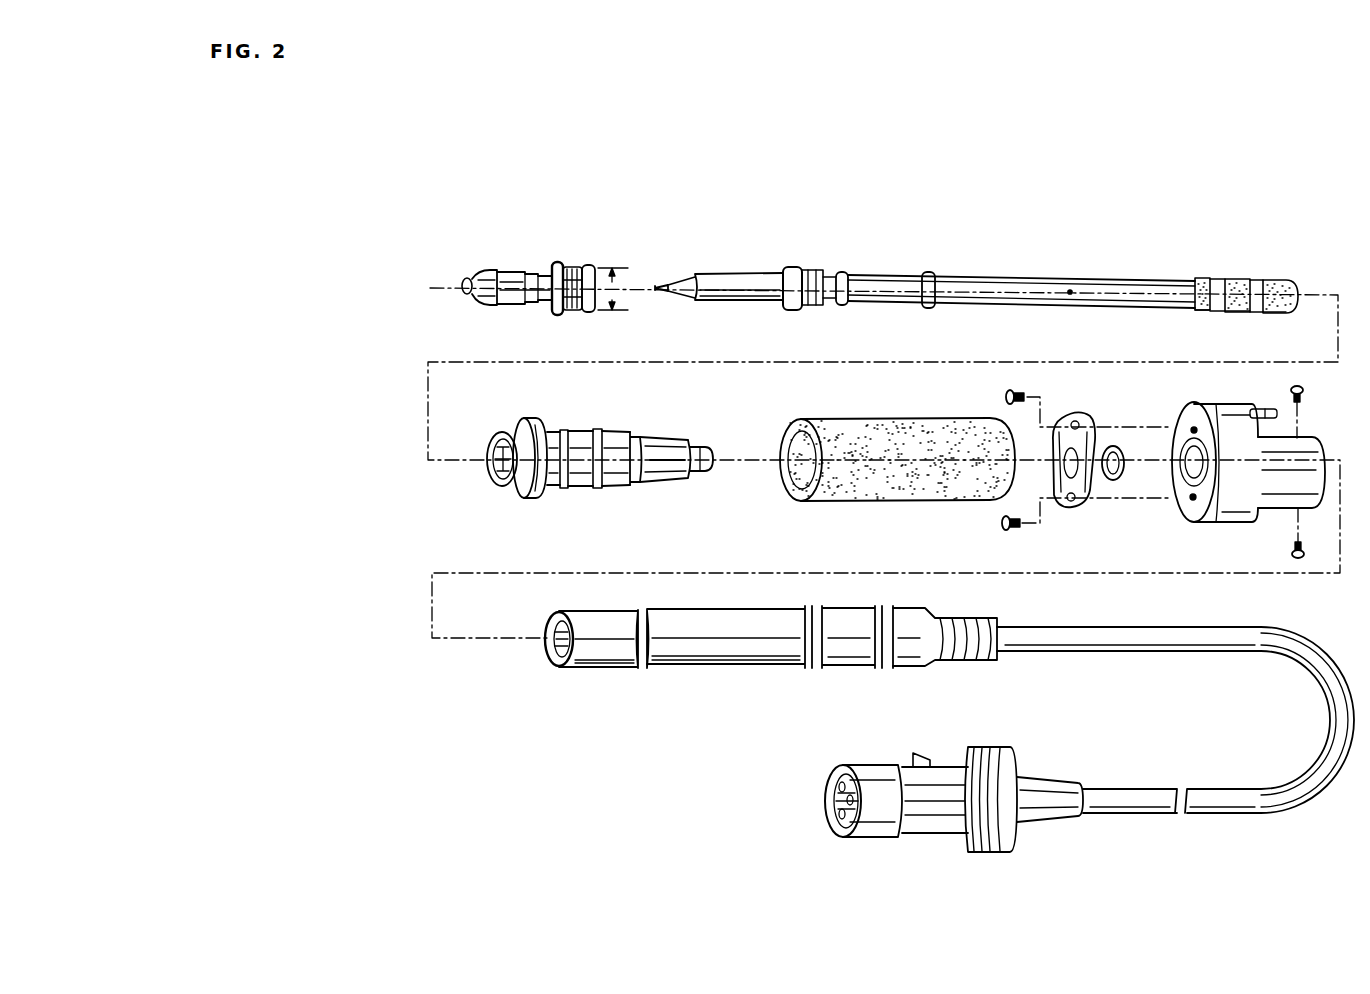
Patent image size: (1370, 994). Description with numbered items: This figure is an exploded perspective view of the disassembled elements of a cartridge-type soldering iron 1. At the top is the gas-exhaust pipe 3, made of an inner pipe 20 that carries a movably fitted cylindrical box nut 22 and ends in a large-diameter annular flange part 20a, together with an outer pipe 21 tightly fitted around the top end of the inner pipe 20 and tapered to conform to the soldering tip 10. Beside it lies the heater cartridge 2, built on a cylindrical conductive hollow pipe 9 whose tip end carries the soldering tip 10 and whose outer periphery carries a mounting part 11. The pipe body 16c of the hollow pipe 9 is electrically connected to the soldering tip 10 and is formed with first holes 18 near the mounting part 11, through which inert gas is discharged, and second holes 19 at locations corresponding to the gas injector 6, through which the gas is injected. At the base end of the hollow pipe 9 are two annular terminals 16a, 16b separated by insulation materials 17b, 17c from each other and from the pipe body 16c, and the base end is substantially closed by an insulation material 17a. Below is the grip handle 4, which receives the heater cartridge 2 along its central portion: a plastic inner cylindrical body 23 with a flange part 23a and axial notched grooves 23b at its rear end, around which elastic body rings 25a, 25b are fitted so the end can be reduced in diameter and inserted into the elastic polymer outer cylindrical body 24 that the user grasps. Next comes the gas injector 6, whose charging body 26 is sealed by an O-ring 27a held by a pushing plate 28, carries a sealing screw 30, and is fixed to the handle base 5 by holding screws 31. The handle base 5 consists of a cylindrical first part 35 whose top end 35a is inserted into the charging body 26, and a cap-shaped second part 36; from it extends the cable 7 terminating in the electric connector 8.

The cartridge-type soldering iron 1 is at (600, 783).
The heater cartridge 2 is at (1046, 217).
The gas-exhaust pipe 3 is at (539, 195).
The grip handle 4 is at (885, 521).
The handle base 5 is at (713, 719).
The gas injector 6 is at (1232, 568).
The cable 7 is at (1317, 784).
The electric connector 8 is at (913, 903).
The hollow pipe 9 is at (972, 278).
The soldering tip 10 is at (661, 281).
The mounting part 11 is at (808, 267).
The annular terminal 16a is at (1253, 289).
The annular terminal 16b is at (1213, 290).
The pipe body 16c is at (1146, 289).
The insulation material 17a is at (1284, 314).
The insulation material 17b is at (1239, 313).
The insulation material 17c is at (1200, 311).
The first holes 18 is at (781, 301).
The second holes 19 is at (1070, 296).
The inner pipe 20 is at (538, 273).
The flange part 20a is at (591, 313).
The outer pipe 21 is at (479, 271).
The box nut 22 is at (568, 262).
The inner cylindrical body 23 is at (588, 421).
The flange part 23a is at (535, 418).
The notched grooves 23b is at (657, 463).
The outer cylindrical body 24 is at (870, 440).
The elastic body ring 25a is at (637, 436).
The elastic body ring 25b is at (683, 440).
The charging body 26 is at (1228, 428).
The O-ring 27a is at (1113, 445).
The pushing plate 28 is at (1076, 412).
The sealing screw 30 is at (1016, 405).
The holding screws 31 is at (1304, 390).
The first part 35 is at (742, 632).
The top end 35a is at (595, 630).
The second part 36 is at (905, 628).